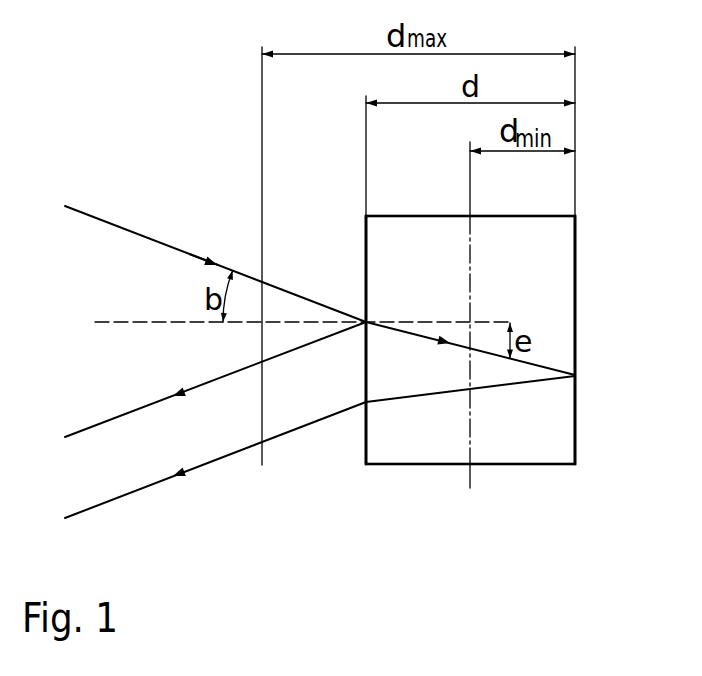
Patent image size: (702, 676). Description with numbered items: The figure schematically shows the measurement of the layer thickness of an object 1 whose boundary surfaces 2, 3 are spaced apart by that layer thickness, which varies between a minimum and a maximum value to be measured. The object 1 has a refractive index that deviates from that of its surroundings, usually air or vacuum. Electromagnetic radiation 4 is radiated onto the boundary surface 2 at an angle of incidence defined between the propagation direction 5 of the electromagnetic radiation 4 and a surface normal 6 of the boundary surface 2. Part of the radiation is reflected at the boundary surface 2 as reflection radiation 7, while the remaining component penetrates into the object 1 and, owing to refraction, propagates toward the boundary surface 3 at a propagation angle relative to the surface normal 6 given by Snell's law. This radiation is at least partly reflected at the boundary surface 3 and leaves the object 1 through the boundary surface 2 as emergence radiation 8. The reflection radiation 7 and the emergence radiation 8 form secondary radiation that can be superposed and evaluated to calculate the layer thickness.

The object 1 is at (493, 447).
The boundary surface 2 is at (366, 441).
The boundary surface 3 is at (575, 441).
The electromagnetic radiation 4 is at (125, 229).
The propagation direction 5 is at (207, 261).
The surface normal 6 is at (125, 323).
The reflection radiation 7 is at (148, 405).
The emergence radiation 8 is at (152, 485).